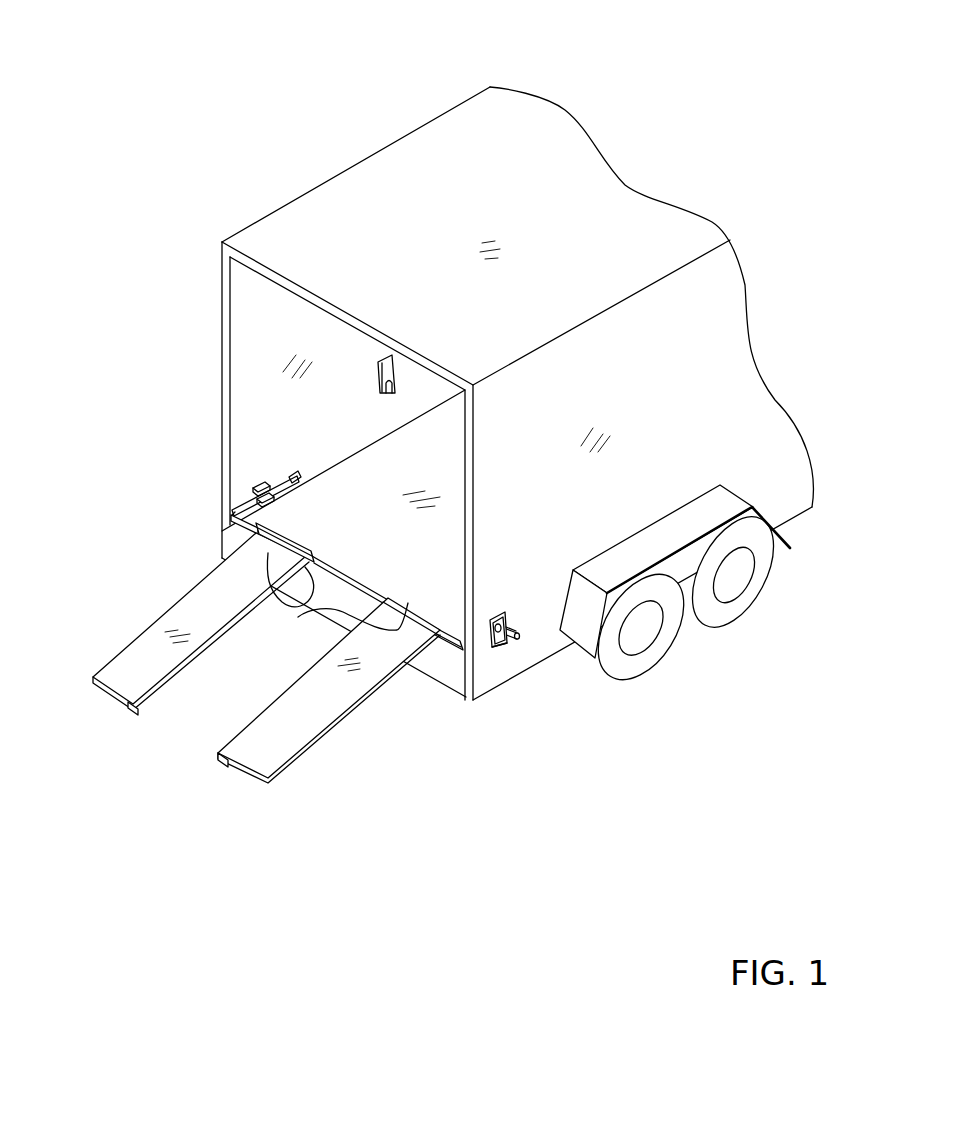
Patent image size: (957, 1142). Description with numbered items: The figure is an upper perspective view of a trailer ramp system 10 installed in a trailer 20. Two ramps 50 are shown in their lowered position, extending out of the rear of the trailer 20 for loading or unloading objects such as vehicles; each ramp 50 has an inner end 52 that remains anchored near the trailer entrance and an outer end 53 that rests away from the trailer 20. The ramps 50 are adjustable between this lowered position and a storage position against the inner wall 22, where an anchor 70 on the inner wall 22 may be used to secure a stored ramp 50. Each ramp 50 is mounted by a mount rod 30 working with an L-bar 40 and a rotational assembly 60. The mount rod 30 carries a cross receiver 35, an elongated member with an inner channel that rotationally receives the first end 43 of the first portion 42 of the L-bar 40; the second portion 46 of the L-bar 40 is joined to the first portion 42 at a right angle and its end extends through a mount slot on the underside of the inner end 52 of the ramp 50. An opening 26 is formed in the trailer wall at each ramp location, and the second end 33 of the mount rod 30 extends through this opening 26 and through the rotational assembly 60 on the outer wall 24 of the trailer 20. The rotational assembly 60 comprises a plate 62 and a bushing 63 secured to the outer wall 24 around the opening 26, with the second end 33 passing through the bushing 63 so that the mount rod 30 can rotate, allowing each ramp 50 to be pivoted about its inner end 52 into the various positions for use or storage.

The trailer ramp system 10 is at (213, 117).
The trailer 20 is at (388, 140).
The inner wall 22 is at (260, 410).
The outer wall 24 is at (660, 403).
The opening 26 is at (252, 488).
The mount rod 30 is at (237, 511).
The second end 33 is at (519, 640).
The cross receiver 35 is at (294, 488).
The L-bar 40 is at (226, 539).
The first portion 42 is at (257, 486).
The first end 43 is at (291, 478).
The second portion 46 is at (262, 530).
The ramp 50 is at (182, 597).
The inner end 52 is at (278, 580).
The outer end 53 is at (126, 704).
The rotational assembly 60 is at (495, 660).
The plate 62 is at (490, 645).
The bushing 63 is at (522, 640).
The anchor 70 is at (378, 378).